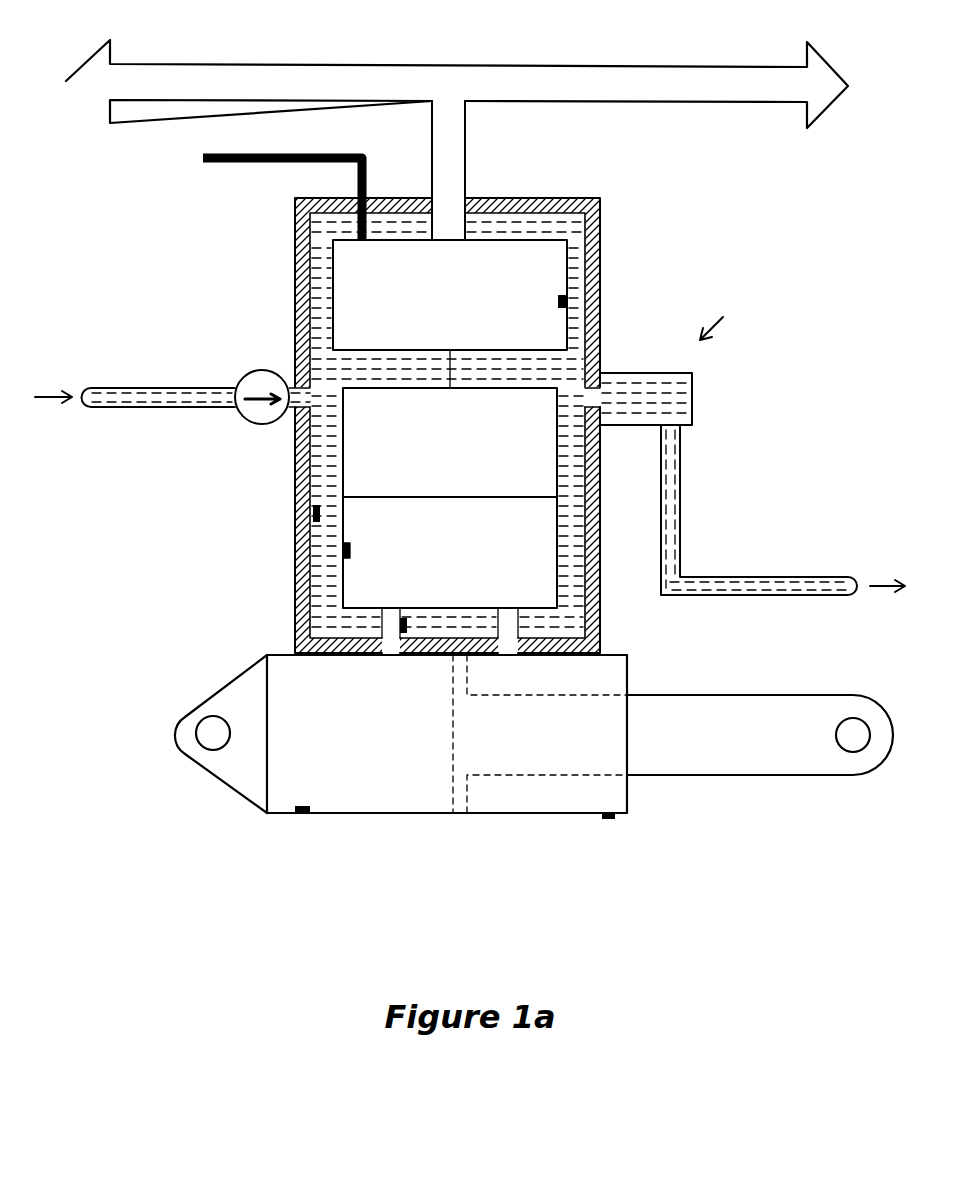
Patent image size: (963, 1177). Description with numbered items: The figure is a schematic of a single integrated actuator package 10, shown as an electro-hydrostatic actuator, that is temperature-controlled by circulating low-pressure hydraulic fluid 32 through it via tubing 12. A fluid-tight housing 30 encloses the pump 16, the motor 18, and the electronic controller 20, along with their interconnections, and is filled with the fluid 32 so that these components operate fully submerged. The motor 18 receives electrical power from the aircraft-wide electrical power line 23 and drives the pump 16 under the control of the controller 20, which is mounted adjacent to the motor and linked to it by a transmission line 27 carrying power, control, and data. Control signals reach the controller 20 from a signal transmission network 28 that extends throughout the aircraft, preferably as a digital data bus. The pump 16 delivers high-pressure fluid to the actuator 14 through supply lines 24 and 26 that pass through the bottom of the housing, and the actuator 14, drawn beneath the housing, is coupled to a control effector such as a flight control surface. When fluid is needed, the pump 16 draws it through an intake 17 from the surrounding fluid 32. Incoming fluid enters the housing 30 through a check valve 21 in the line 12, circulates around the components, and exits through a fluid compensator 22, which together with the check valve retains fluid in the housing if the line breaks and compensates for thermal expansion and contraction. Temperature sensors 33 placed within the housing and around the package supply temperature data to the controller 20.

The integrated actuator package 10 is at (175, 809).
The tubing 12 is at (160, 408).
The actuator 14 is at (500, 815).
The pump 16 is at (344, 566).
The intake 17 is at (344, 550).
The motor 18 is at (343, 472).
The electronic controller 20 is at (530, 235).
The check valve 21 is at (262, 370).
The fluid compensator 22 is at (693, 397).
The electrical power line 23 is at (222, 163).
The supply line 24 is at (520, 625).
The supply line 26 is at (377, 612).
The transmission line 27 is at (452, 365).
The signal transmission network 28 is at (632, 66).
The fluid-tight housing 30 is at (293, 247).
The low-pressure hydraulic fluid 32 is at (565, 487).
The temperature sensor 33 is at (568, 301).